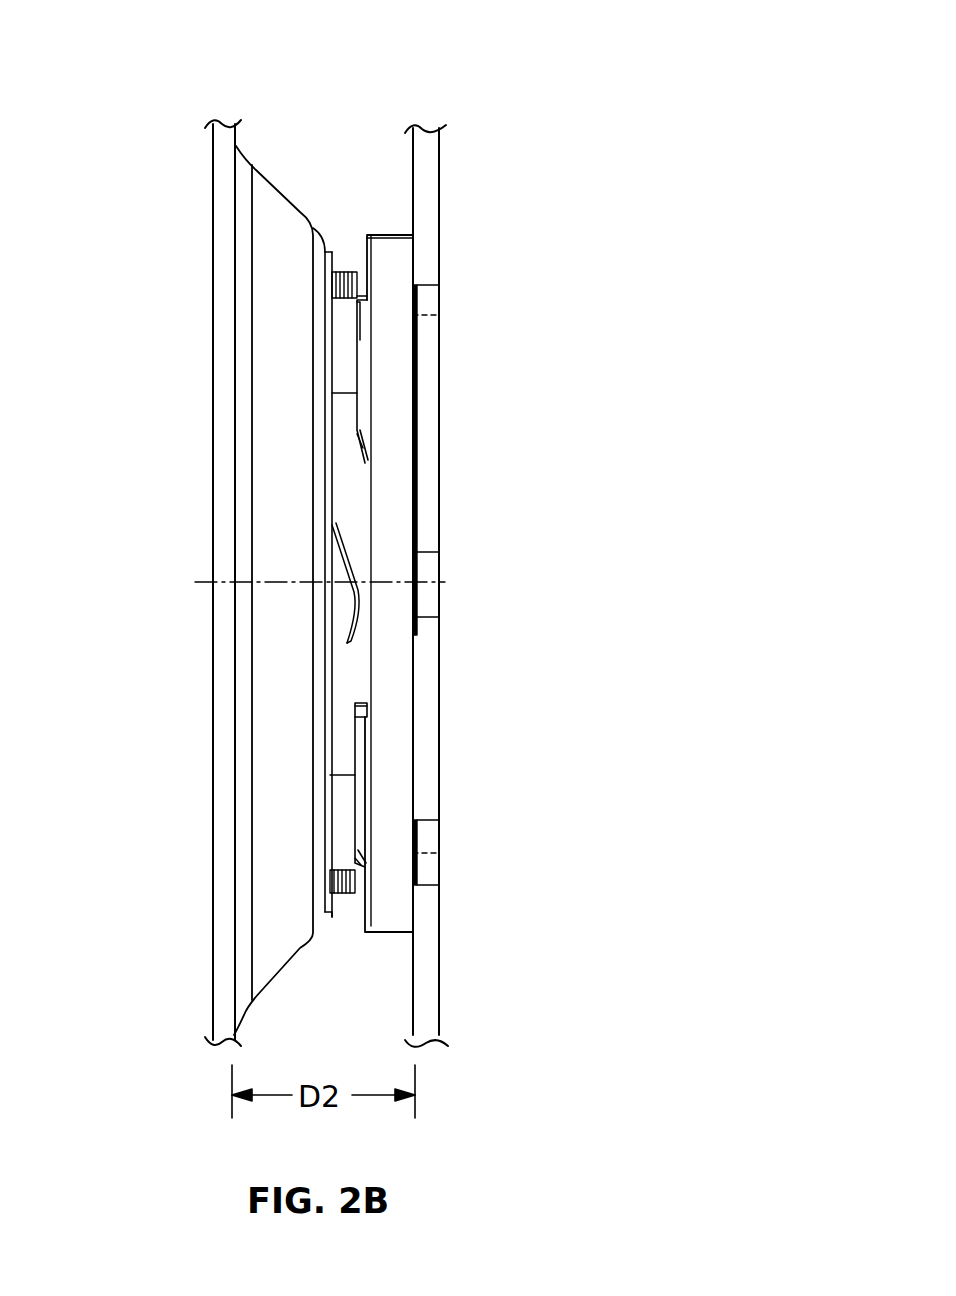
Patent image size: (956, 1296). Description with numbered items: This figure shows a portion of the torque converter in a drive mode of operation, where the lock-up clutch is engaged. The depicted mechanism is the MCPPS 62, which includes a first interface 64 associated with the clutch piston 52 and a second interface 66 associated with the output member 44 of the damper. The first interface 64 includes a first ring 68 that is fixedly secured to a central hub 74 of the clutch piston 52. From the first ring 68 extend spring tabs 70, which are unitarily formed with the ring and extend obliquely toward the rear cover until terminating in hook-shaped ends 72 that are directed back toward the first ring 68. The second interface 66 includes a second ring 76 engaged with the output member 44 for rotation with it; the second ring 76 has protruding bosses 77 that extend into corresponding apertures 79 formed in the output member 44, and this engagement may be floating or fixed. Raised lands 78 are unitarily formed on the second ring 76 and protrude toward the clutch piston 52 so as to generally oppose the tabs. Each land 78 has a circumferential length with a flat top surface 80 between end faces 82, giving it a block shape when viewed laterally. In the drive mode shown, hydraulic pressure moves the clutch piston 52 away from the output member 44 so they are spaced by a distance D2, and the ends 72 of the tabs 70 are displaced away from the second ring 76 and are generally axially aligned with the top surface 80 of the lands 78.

The output member 44 is at (425, 155).
The clutch piston 52 is at (227, 132).
The MCPPS 62 is at (580, 140).
The first interface 64 is at (347, 230).
The second interface 66 is at (390, 200).
The first ring 68 is at (330, 487).
The spring tabs 70 is at (353, 300).
The hook-shaped ends 72 is at (350, 306).
The central hub 74 is at (290, 225).
The second ring 76 is at (393, 687).
The protruding bosses 77 is at (427, 332).
The raised lands 78 is at (360, 378).
The apertures 79 is at (420, 286).
The flat top surface 80 is at (357, 358).
The end faces 82 is at (362, 300).